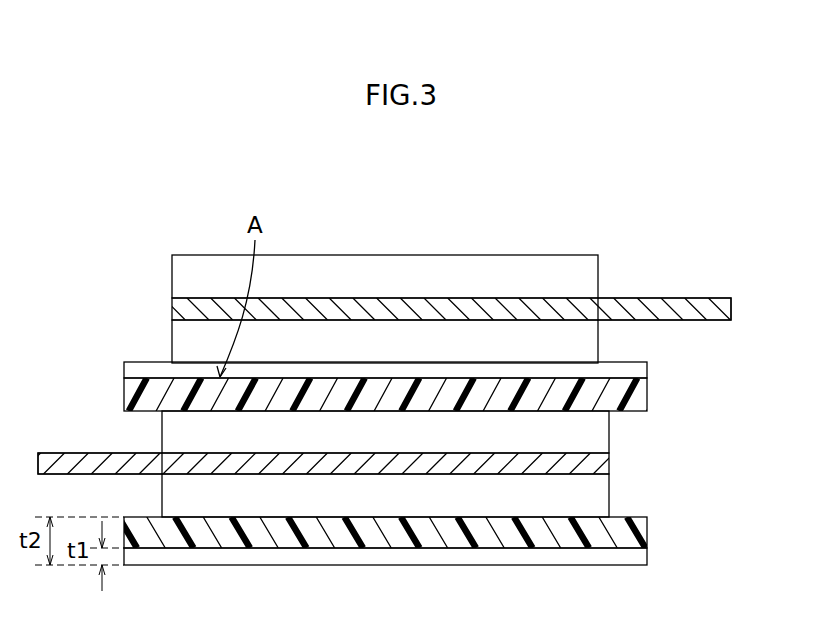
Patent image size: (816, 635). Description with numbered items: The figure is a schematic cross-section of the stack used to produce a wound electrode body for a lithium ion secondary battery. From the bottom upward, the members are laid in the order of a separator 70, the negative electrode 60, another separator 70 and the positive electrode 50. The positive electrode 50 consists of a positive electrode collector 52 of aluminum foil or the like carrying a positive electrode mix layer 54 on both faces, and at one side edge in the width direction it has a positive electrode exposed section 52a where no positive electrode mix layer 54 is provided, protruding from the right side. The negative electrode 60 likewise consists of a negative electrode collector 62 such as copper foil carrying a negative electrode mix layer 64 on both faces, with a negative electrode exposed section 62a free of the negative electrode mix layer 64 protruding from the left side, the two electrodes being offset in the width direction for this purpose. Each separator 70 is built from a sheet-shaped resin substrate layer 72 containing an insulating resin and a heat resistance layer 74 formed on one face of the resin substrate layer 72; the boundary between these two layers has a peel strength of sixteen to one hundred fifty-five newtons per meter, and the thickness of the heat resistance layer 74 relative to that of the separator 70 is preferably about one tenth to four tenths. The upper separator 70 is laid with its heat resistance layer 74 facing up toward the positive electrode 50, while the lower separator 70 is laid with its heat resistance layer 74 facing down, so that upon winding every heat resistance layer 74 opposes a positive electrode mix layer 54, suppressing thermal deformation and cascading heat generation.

The positive electrode 50 is at (85, 260).
The positive electrode collector 52 is at (172, 309).
The positive electrode exposed section 52a is at (698, 298).
The positive electrode mix layer 54 is at (172, 277).
The negative electrode 60 is at (682, 421).
The negative electrode collector 62 is at (609, 469).
The negative electrode exposed section 62a is at (80, 452).
The negative electrode mix layer 64 is at (609, 440).
The separator 70 is at (730, 355).
The resin substrate layer 72 is at (647, 398).
The heat resistance layer 74 is at (647, 368).